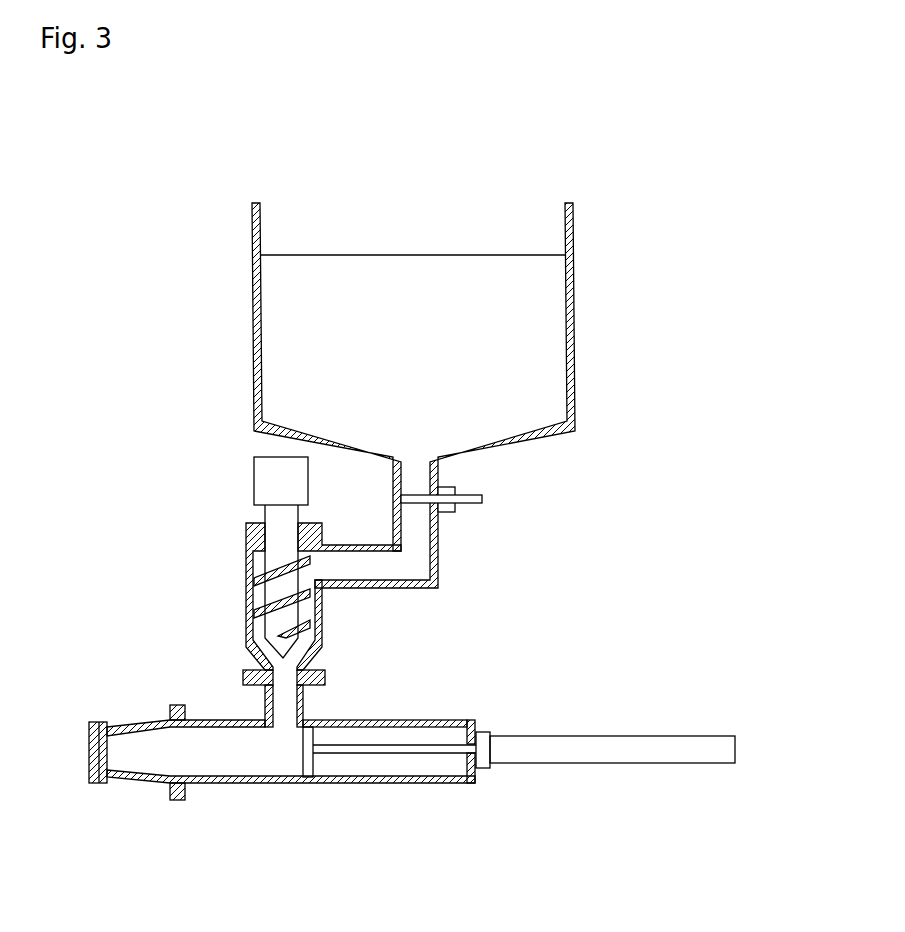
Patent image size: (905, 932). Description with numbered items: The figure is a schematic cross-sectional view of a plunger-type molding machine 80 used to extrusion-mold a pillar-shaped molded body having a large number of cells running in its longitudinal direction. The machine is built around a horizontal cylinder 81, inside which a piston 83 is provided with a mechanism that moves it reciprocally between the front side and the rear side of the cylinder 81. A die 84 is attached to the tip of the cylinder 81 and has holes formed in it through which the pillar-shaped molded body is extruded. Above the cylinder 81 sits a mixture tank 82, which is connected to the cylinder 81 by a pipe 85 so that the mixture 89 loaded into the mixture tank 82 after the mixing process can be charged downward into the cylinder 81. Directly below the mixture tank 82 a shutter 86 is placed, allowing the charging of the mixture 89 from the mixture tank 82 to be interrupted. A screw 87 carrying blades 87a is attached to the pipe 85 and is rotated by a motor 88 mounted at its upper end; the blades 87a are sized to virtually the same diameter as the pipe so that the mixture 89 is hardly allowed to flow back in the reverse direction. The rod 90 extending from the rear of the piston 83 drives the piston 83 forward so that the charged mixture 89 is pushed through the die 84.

The plunger-type molding machine 80 is at (440, 193).
The cylinder 81 is at (152, 748).
The mixture tank 82 is at (575, 372).
The piston 83 is at (402, 752).
The die 84 is at (95, 778).
The pipe 85 is at (395, 566).
The shutter 86 is at (480, 497).
The screw 87 is at (280, 550).
The blade 87a is at (275, 612).
The motor 88 is at (280, 485).
The mixture 89 is at (540, 345).
The piston rod 90 is at (578, 745).